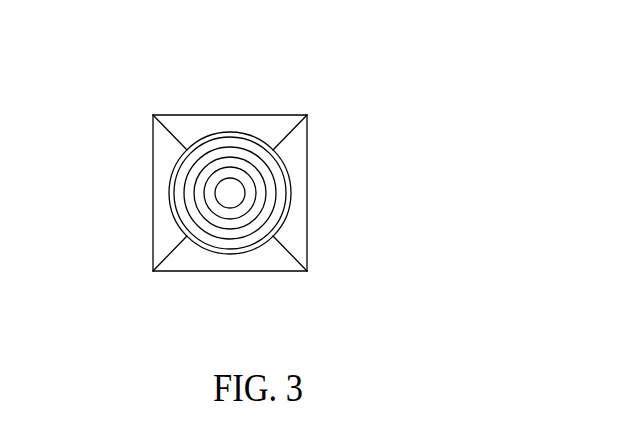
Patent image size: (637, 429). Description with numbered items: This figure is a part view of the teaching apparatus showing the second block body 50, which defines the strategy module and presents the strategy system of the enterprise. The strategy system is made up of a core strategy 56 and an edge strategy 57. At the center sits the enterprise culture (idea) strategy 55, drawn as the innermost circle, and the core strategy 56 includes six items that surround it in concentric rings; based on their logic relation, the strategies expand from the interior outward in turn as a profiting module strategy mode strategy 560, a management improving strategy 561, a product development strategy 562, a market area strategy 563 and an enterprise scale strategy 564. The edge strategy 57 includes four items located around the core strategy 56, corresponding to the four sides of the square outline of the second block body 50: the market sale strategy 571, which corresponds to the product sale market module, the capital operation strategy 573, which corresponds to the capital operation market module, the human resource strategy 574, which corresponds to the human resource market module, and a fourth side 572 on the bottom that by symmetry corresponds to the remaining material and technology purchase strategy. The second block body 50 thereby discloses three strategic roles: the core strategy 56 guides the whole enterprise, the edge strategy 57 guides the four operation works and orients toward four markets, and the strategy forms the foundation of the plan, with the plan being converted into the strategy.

The second block body 50 is at (307, 148).
The enterprise culture (idea) strategy 55 is at (240, 192).
The core strategy 56 is at (245, 138).
The edge strategy 57 is at (307, 136).
The profiting module strategy mode strategy 560 is at (248, 197).
The management improving strategy 561 is at (248, 205).
The product development strategy 562 is at (252, 213).
The market area strategy 563 is at (254, 231).
The enterprise scale strategy 564 is at (250, 243).
The market sale strategy 571 is at (153, 212).
The bottom side wall 572 is at (237, 270).
The capital operation strategy 573 is at (307, 162).
The human resource strategy 574 is at (227, 115).